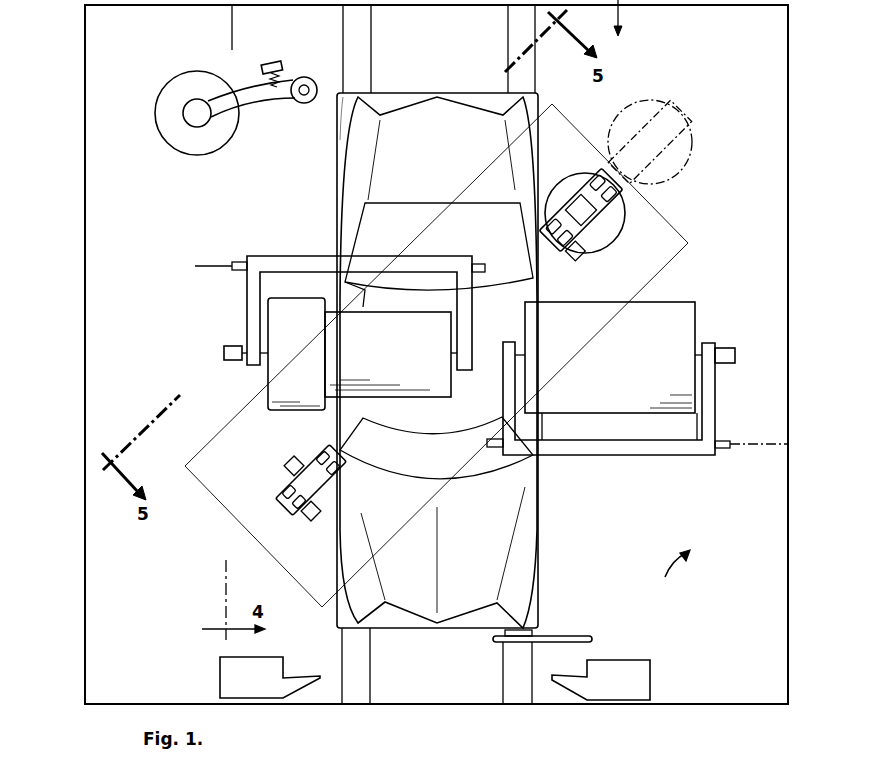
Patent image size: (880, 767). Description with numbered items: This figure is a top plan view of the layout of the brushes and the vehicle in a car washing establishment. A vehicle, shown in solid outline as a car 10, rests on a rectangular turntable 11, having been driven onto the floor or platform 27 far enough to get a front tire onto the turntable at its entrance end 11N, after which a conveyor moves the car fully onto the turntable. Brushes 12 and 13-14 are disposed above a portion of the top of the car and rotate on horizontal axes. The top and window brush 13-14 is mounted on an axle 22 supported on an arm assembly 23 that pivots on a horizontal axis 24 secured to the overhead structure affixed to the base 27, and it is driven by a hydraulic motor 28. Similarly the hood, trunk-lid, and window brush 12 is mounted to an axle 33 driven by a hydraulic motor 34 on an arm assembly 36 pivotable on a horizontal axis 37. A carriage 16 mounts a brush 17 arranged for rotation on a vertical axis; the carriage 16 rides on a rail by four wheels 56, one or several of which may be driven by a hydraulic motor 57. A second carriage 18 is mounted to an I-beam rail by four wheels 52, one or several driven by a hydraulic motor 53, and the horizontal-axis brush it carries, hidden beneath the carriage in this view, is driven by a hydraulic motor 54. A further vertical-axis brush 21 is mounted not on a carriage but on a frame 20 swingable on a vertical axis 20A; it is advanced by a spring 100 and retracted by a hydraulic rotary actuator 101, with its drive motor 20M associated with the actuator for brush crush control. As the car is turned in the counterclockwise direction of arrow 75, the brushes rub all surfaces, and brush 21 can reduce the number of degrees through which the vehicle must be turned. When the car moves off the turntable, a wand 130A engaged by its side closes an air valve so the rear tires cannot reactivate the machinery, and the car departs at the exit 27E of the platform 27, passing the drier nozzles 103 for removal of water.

The car 10 is at (357, 163).
The turntable 11 is at (340, 105).
The entrance end of turntable 11N is at (417, 93).
The brush 12 is at (668, 300).
The brush 13 is at (296, 303).
The brush 14 is at (381, 364).
The carriage 16 is at (588, 217).
The brush 17 is at (615, 220).
The carriage 18 is at (283, 503).
The frame 20 is at (242, 84).
The vertical axis 20A is at (300, 78).
The drive motor 20M is at (197, 117).
The brush 21 is at (170, 95).
The axle 22 is at (266, 364).
The arm assembly 23 is at (253, 288).
The horizontal axis 24 is at (215, 263).
The base 27 is at (98, 603).
The exit 27E is at (433, 722).
The hydraulic motor 28 is at (222, 351).
The axle 33 is at (700, 345).
The hydraulic motor 34 is at (729, 354).
The arm assembly 36 is at (707, 400).
The horizontal axis 37 is at (769, 447).
The wheels 52 is at (284, 490).
The hydraulic motor 53 is at (310, 516).
The hydraulic motor 54 is at (290, 460).
The wheels 56 is at (554, 222).
The hydraulic motor 57 is at (577, 258).
The arrow 75 is at (682, 571).
The spring 100 is at (267, 82).
The hydraulic rotary actuator 101 is at (301, 96).
The drier nozzles 103 is at (322, 675).
The wand 130A is at (543, 636).